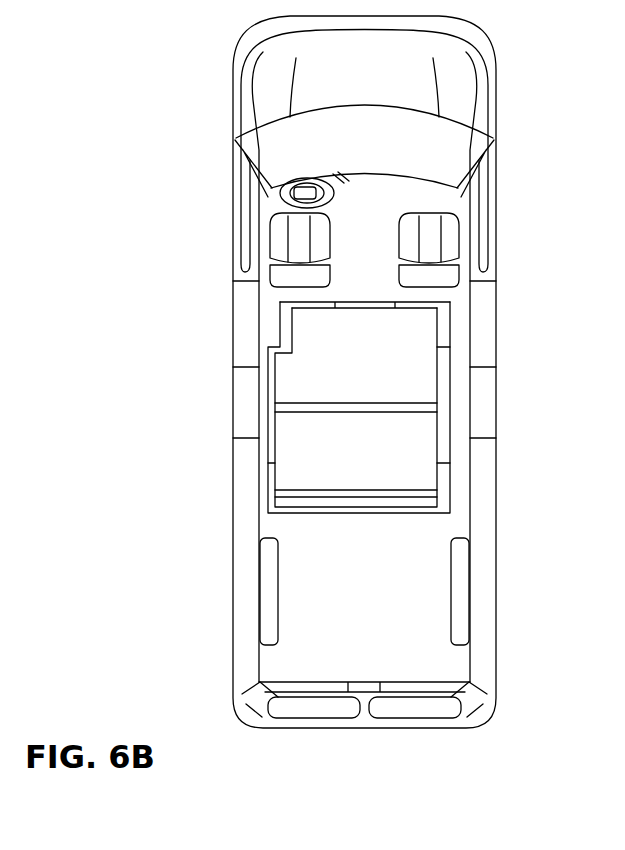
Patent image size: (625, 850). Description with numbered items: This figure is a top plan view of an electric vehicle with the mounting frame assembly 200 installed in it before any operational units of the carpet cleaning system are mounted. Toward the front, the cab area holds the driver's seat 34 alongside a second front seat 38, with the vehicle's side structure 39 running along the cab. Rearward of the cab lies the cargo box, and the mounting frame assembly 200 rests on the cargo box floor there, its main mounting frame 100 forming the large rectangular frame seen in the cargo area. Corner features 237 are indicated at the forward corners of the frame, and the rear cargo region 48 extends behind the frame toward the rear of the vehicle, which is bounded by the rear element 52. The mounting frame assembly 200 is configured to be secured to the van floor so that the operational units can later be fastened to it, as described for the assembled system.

The driver's seat 34 is at (283, 247).
The passenger seat 38 is at (448, 245).
The front door 39 is at (494, 166).
The mounting bracket 237 is at (282, 317).
The main mounting frame 100 is at (450, 397).
The mounting frame assembly 200 is at (312, 530).
The rear cargo area 48 is at (437, 532).
The rear bumper 52 is at (338, 728).